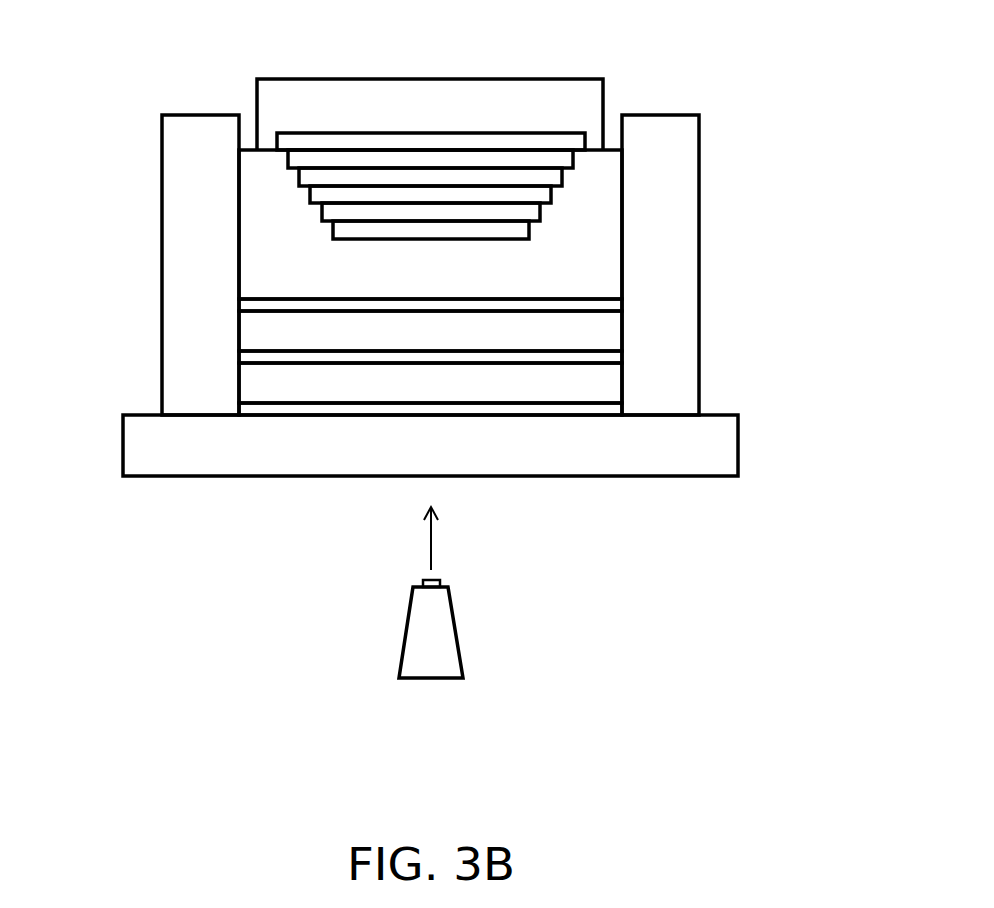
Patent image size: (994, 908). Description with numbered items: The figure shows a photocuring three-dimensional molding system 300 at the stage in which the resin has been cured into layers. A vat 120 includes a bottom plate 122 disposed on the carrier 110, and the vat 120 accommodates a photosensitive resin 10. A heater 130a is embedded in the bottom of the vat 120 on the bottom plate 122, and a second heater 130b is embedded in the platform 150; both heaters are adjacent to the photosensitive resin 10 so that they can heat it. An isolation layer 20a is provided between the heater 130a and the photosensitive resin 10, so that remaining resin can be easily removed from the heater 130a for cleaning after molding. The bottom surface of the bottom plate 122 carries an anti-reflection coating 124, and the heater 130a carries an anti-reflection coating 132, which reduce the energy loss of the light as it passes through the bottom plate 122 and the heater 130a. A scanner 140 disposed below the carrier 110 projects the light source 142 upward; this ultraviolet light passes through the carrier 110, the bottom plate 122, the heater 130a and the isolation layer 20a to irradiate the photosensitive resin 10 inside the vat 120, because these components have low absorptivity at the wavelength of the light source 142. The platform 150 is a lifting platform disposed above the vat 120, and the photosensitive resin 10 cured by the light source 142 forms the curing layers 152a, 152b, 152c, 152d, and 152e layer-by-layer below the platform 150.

The photocuring three-dimensional molding system 300 is at (110, 72).
The carrier 110 is at (728, 445).
The vat 120 is at (160, 273).
The bottom plate 122 is at (609, 382).
The anti-reflection coating 124 is at (258, 410).
The photosensitive resin 10 is at (609, 270).
The isolation layer 20a is at (258, 304).
The heater 130a is at (609, 331).
The heater 130b is at (528, 140).
The anti-reflection coating 132 is at (258, 357).
The platform 150 is at (597, 127).
The curing layer 152a is at (562, 160).
The curing layer 152b is at (552, 177).
The curing layer 152c is at (542, 195).
The curing layer 152d is at (532, 212).
The curing layer 152e is at (520, 230).
The scanner 140 is at (447, 632).
The light source 142 is at (433, 543).